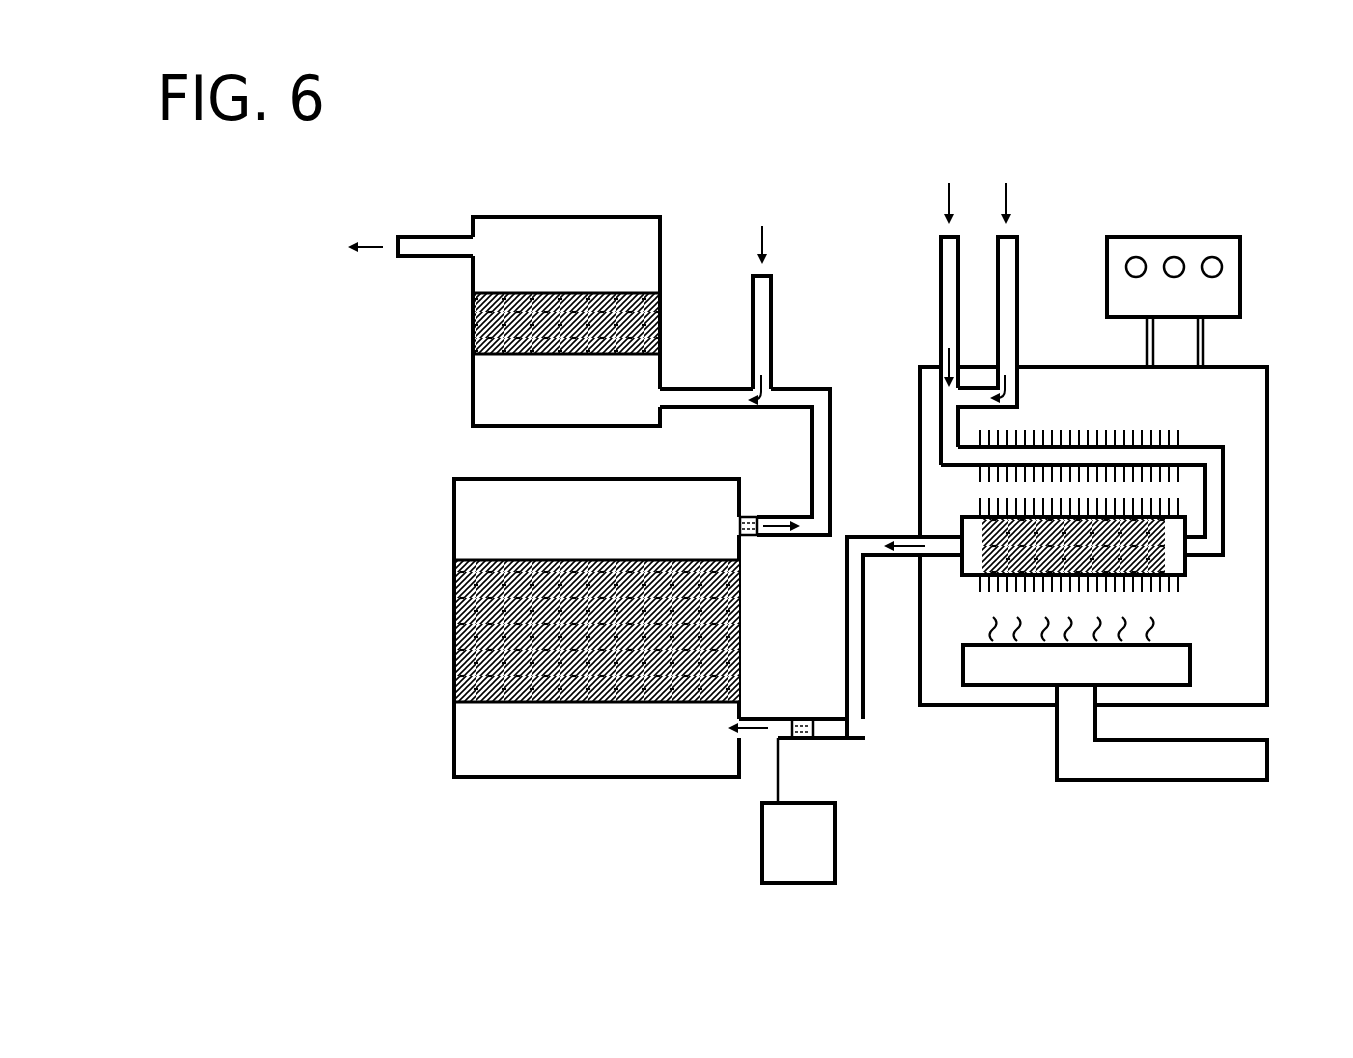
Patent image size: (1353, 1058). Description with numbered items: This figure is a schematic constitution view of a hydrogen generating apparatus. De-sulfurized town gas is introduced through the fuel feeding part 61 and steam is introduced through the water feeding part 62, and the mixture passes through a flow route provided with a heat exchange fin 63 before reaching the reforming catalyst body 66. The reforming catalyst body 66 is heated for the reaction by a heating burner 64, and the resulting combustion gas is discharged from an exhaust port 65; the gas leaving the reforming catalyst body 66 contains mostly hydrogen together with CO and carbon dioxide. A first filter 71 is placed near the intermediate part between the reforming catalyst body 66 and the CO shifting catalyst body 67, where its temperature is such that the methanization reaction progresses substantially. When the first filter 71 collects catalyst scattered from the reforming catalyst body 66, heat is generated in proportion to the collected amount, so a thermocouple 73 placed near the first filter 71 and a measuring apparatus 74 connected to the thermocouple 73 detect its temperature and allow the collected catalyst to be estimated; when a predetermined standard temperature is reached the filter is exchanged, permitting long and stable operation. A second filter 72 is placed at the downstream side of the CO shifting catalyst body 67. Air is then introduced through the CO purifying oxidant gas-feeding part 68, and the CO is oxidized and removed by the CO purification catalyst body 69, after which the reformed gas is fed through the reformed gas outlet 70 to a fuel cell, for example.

The fuel feeding part 61 is at (940, 269).
The water feeding part 62 is at (1018, 270).
The heat exchange fin 63 is at (1180, 437).
The heating burner 64 is at (989, 680).
The exhaust port 65 is at (1173, 257).
The reforming catalyst body 66 is at (1163, 553).
The CO shifting catalyst body 67 is at (645, 703).
The CO purifying oxidant gas-feeding part 68 is at (752, 317).
The CO purification catalyst body 69 is at (547, 293).
The reformed gas outlet 70 is at (431, 237).
The first filter 71 is at (805, 718).
The second filter 72 is at (760, 540).
The thermocouple 73 is at (771, 778).
The measuring apparatus 74 is at (835, 858).